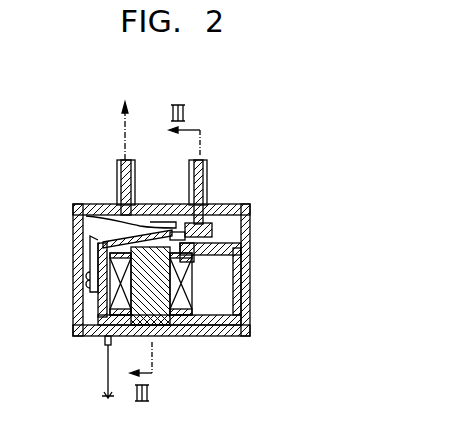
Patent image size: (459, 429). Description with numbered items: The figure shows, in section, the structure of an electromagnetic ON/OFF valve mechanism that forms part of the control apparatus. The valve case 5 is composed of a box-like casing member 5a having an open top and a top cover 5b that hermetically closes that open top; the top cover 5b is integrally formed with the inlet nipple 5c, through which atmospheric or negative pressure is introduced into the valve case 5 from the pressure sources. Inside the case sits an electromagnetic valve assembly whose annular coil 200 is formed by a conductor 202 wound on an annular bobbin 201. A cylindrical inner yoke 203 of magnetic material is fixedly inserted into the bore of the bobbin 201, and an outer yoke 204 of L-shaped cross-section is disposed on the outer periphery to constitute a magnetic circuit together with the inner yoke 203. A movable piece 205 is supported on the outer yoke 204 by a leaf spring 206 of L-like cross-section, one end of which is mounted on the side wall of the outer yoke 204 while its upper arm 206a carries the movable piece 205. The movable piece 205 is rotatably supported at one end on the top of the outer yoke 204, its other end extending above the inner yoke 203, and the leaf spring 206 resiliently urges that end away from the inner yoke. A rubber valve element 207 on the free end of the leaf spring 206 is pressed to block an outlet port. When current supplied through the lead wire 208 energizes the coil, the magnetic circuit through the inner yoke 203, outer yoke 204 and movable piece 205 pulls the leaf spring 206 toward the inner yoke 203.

The valve case 5 is at (266, 192).
The casing member 5a is at (243, 250).
The top cover 5b is at (232, 207).
The inlet nipple 5c is at (134, 186).
The annular coil 200 is at (236, 306).
The annular bobbin 201 is at (198, 320).
The conductor 202 is at (207, 302).
The inner yoke 203 is at (158, 305).
The outer yoke 204 is at (88, 306).
The movable piece 205 is at (95, 228).
The leaf spring 206 is at (95, 250).
The upper arm 206a is at (112, 219).
The valve element 207 is at (213, 232).
The lead wire 208 is at (106, 388).